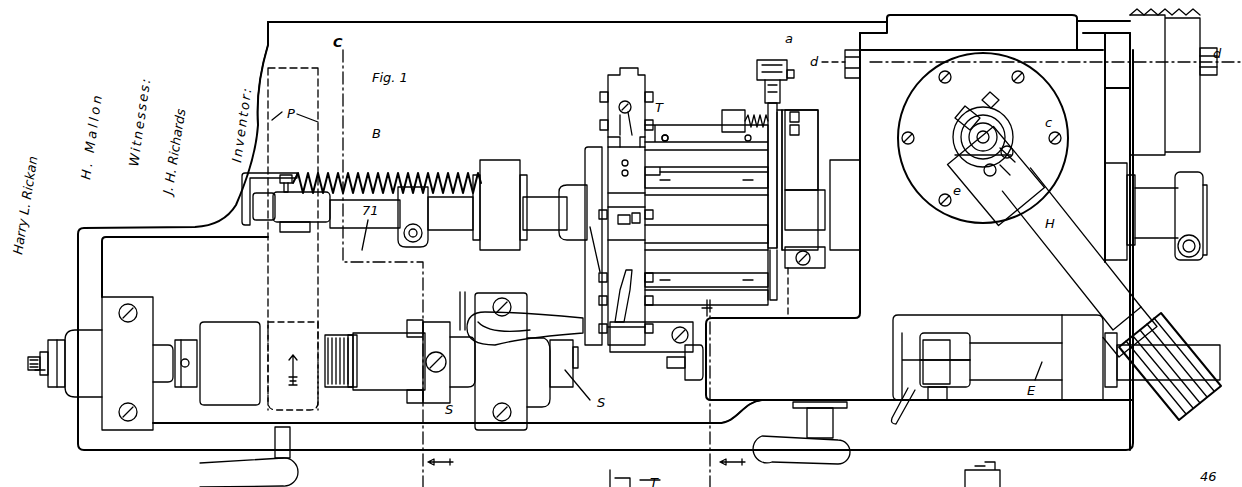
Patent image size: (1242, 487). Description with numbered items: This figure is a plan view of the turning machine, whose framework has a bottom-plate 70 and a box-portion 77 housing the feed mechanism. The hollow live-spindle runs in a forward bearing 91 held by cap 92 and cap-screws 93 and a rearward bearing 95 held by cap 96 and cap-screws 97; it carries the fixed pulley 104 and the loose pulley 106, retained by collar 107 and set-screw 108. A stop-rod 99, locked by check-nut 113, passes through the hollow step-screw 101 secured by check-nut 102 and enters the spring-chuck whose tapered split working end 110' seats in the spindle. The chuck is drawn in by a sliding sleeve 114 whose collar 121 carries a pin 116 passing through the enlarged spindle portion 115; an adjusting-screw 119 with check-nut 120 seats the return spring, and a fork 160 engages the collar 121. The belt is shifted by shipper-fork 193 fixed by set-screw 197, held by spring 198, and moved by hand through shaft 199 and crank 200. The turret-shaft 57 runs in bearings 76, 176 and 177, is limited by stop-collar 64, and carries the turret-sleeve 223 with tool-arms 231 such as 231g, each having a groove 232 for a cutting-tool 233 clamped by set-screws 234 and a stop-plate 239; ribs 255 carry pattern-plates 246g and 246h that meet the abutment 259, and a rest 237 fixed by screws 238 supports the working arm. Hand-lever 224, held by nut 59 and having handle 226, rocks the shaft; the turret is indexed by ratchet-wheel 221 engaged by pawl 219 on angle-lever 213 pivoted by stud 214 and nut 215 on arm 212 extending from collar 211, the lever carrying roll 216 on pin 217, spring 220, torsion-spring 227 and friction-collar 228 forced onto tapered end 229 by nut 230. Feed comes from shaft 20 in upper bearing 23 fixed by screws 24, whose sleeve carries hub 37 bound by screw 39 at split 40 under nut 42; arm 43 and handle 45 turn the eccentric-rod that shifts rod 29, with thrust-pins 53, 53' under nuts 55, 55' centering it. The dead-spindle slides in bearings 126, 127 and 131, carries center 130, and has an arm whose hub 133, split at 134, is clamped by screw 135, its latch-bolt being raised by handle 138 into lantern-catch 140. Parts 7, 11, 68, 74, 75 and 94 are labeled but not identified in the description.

The spindle housing cylinder 7 is at (1192, 85).
The adjusting nut 11 is at (1214, 70).
The hand-lever shaft 20 is at (960, 130).
The upper bearing 23 is at (1035, 102).
The screws 24 is at (906, 145).
The rod 29 is at (962, 140).
The hub 37 is at (968, 157).
The binding-screw 39 is at (990, 92).
The split 40 is at (962, 114).
The nut 42 is at (990, 128).
The hollow arm 43 is at (1088, 268).
The handle 45 is at (1165, 330).
The thrust-pin 53 is at (969, 174).
The thrust-pin 53' is at (1020, 138).
The nut 55 is at (989, 188).
The nut 55' is at (1030, 156).
The turret-shaft 57 is at (808, 200).
The nut 59 is at (578, 188).
The clamping stop-collar 64 is at (436, 184).
The knob 68 is at (1190, 185).
The bottom-plate 70 is at (266, 48).
The base web 74 is at (765, 386).
The base column 75 is at (1080, 392).
The bearing 76 is at (504, 170).
The box-portion 77 is at (862, 126).
The spindle-bearing 91 is at (462, 340).
The cap 92 is at (484, 412).
The cap-screws 93 is at (502, 300).
The bearing cap 94 is at (545, 385).
The spindle-bearing 95 is at (88, 340).
The cap 96 is at (148, 310).
The cap-screws 97 is at (128, 303).
The stop-rod 99 is at (34, 356).
The step-screw 101 is at (47, 380).
The check-nut 102 is at (58, 340).
The fixed pulley 104 is at (290, 330).
The loose pulley 106 is at (228, 330).
The collar 107 is at (186, 387).
The set-screw 108 is at (185, 358).
The working end of chuck 110' is at (591, 363).
The check-nut 113 is at (38, 372).
The sliding sleeve 114 is at (386, 380).
The enlarged portion of spindle 115 is at (456, 367).
The pin 116 is at (437, 352).
The adjusting-screw 119 is at (332, 388).
The check-nut 120 is at (353, 334).
The collar 121 is at (434, 395).
The bearing 126 is at (705, 362).
The bearing 127 is at (893, 352).
The center 130 is at (676, 370).
The bearing 131 is at (1112, 365).
The hub 133 is at (950, 336).
The split 134 is at (960, 360).
The clamp-screw 135 is at (945, 398).
The handle 138 is at (918, 462).
The lantern-catch 140 is at (782, 456).
The fork 160 is at (414, 322).
The bearing 176 is at (1133, 192).
The bearing 177 is at (835, 210).
The shipper-fork 193 is at (262, 205).
The set-screw 197 is at (291, 176).
The spring 198 is at (400, 176).
The shaft 199 is at (283, 438).
The crank 200 is at (296, 232).
The collar 211 is at (786, 260).
The pawl-carrying arm 212 is at (786, 116).
The angle-lever 213 is at (765, 90).
The stud 214 is at (800, 130).
The nut 215 is at (800, 118).
The anti-friction roll 216 is at (772, 60).
The pin 217 is at (795, 78).
The pawl 219 is at (779, 130).
The spiral spring 220 is at (768, 108).
The ratchet-wheel 221 is at (775, 275).
The turret-sleeve 223 is at (755, 207).
The hand-lever 224 is at (592, 292).
The handle 226 is at (533, 330).
The torsion-spring 227 is at (745, 133).
The friction-collar 228 is at (723, 118).
The tapered end 229 is at (678, 139).
The nut 230 is at (748, 130).
The tool-arms 231 is at (618, 222).
The tool-arm 231g is at (632, 100).
The groove 232 is at (624, 215).
The cutting-tool 233 is at (642, 220).
The set-screws 234 is at (600, 124).
The rest 237 is at (655, 355).
The screws 238 is at (690, 336).
The stop-plate 239 is at (632, 70).
The pattern-plate 246g is at (668, 130).
The pattern-plate 246h is at (712, 190).
The ribs 255 is at (672, 180).
The pattern-stop 259 is at (724, 309).